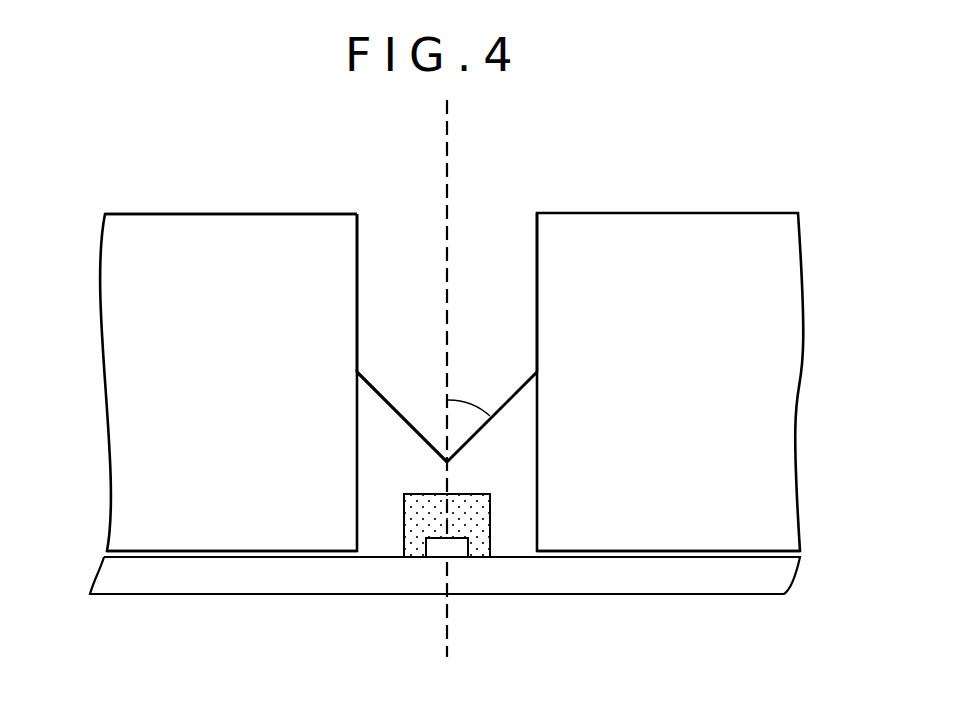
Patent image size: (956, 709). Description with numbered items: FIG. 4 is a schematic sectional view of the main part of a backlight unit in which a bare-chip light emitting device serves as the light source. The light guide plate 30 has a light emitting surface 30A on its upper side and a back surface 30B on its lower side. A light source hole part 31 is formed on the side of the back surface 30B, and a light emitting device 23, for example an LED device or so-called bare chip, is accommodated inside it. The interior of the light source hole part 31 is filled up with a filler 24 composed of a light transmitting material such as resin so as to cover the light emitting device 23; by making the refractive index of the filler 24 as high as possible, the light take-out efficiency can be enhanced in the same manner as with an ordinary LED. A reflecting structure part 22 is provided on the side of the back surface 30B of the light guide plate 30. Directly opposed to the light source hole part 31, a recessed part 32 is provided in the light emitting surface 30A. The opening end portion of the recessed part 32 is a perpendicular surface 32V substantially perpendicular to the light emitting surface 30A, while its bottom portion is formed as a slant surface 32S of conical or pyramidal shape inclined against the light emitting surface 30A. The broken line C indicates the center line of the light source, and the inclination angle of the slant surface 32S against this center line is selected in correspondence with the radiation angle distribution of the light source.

The reflecting structure part 22 is at (659, 571).
The light emitting device 23 is at (438, 548).
The filler 24 is at (423, 523).
The light guide plate 30 is at (704, 245).
The light emitting surface 30A is at (160, 212).
The back surface 30B is at (167, 554).
The light source hole part 31 is at (488, 518).
The recessed part 32 is at (472, 310).
The perpendicular surface 32V is at (358, 251).
The slant surface 32S is at (385, 395).
The center line of the light source C is at (447, 120).